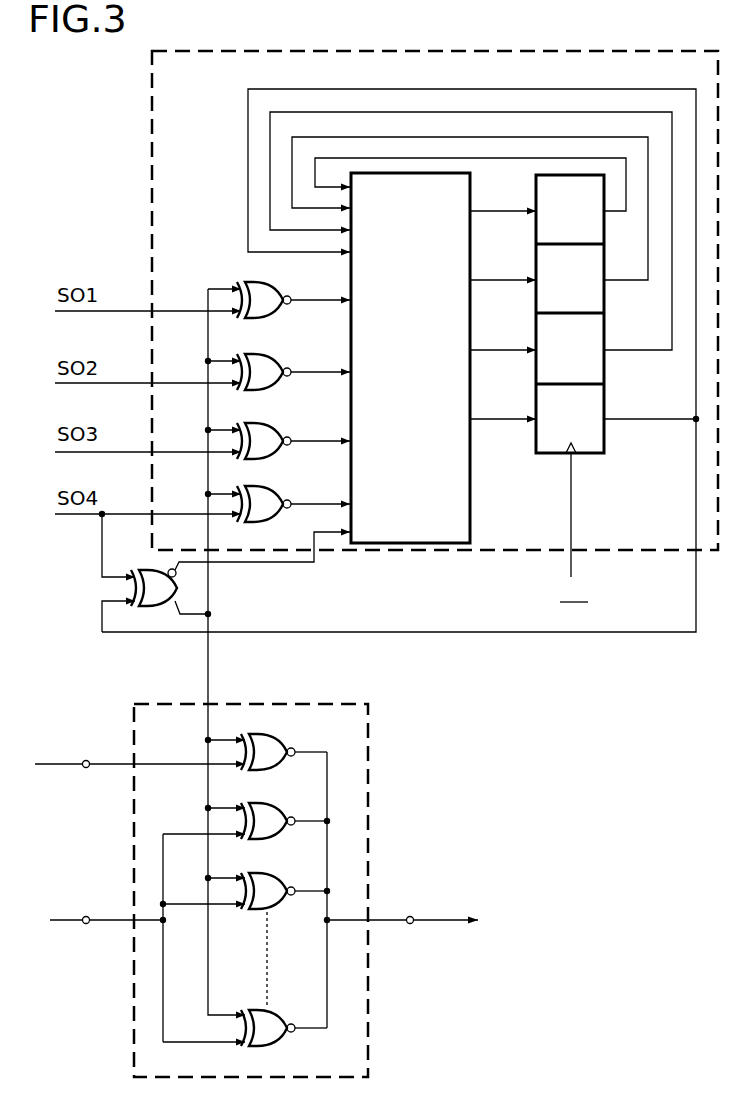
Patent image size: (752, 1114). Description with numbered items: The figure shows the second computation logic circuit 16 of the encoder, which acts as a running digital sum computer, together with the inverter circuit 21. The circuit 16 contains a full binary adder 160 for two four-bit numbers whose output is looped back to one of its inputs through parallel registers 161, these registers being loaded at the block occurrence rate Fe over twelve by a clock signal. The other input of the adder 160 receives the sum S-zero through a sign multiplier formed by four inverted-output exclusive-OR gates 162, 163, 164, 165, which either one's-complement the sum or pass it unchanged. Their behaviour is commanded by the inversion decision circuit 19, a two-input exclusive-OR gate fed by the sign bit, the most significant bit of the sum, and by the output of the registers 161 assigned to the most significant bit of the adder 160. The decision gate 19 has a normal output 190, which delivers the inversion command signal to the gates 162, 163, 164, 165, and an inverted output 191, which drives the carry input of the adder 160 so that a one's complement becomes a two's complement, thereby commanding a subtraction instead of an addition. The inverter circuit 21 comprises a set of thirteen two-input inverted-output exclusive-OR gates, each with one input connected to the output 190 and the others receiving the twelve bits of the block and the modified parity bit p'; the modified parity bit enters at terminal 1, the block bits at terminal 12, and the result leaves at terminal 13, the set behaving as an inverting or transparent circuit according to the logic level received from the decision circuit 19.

The second computation logic circuit 16 is at (226, 86).
The full binary adder 160 is at (440, 205).
The parallel registers 161 is at (596, 441).
The exclusive-OR type logic circuit with inverted output 162 is at (262, 298).
The exclusive-OR type logic circuit with inverted output 163 is at (262, 370).
The exclusive-OR type logic circuit with inverted output 164 is at (262, 439).
The exclusive-OR type logic circuit with inverted output 165 is at (262, 502).
The inversion decision circuit 19 is at (147, 597).
The normal output 190 is at (210, 627).
The inverted output 191 is at (178, 562).
The inverter circuit 21 is at (357, 802).
The input terminal P' 1 is at (140, 751).
The input terminal 12 is at (106, 912).
The output terminal 13 is at (402, 912).